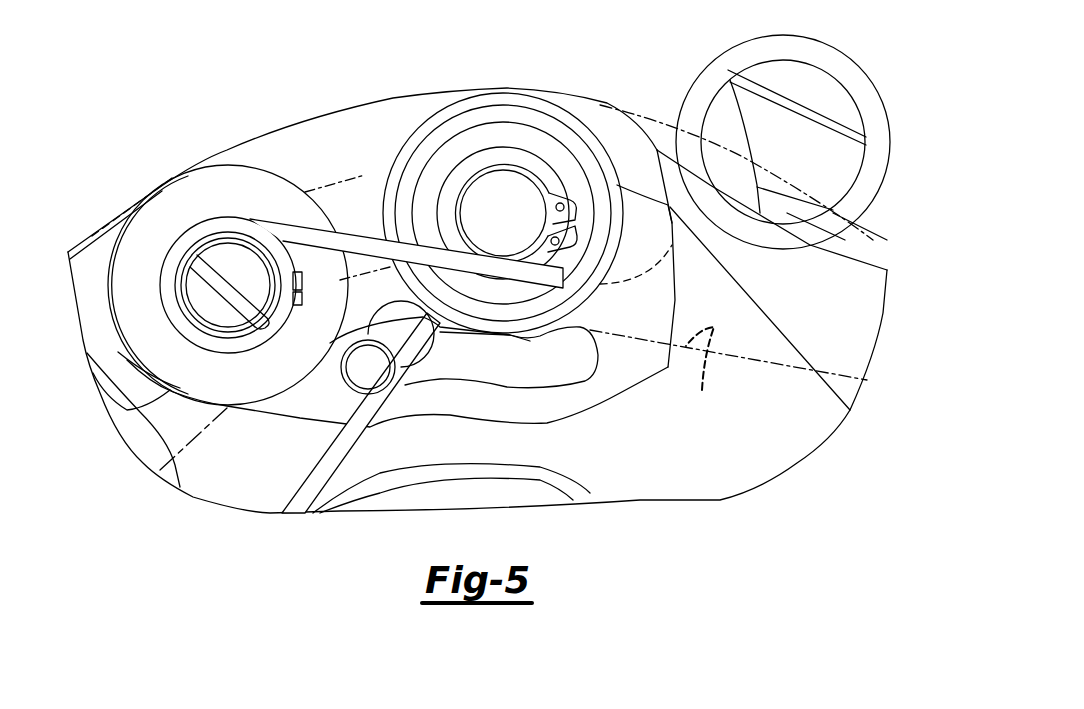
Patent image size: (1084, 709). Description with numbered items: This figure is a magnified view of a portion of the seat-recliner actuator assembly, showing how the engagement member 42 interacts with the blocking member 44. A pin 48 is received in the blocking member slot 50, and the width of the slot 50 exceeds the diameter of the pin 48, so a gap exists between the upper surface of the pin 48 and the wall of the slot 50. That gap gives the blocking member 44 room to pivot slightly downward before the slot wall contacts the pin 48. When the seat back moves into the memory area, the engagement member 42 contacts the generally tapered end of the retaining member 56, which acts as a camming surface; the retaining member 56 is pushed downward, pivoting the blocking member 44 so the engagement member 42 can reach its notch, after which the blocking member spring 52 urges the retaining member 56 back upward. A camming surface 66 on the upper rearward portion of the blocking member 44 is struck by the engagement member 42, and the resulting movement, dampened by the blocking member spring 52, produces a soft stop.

The engagement member 42 is at (850, 60).
The blocking member 44 is at (399, 100).
The pin 48 is at (373, 368).
The blocking member slot 50 is at (575, 349).
The blocking member spring 52 is at (356, 242).
The retaining member 56 is at (700, 375).
The blocking member camming surface 66 is at (633, 127).